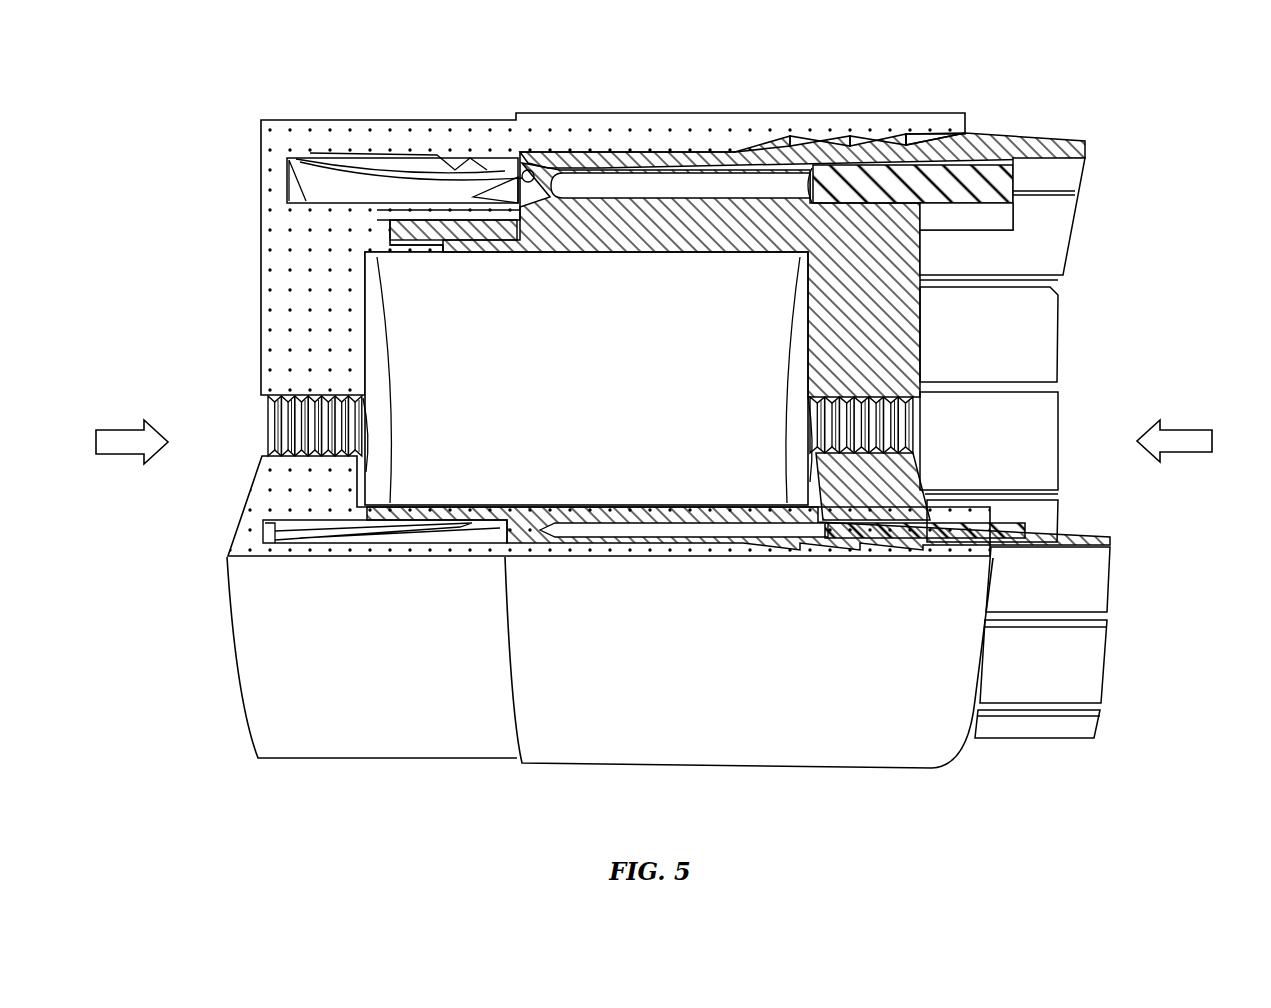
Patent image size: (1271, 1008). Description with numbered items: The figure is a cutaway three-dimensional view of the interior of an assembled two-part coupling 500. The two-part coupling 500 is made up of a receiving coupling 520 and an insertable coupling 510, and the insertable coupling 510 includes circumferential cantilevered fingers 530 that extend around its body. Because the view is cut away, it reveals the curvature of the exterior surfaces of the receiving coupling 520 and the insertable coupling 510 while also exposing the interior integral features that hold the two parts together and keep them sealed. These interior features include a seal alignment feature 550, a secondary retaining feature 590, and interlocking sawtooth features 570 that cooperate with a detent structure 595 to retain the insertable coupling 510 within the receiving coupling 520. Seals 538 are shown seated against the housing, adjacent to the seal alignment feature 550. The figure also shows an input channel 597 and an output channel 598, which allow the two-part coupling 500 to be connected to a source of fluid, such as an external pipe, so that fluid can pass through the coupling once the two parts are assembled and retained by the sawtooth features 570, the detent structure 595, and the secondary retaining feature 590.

The two-part coupling 500 is at (176, 107).
The insertable coupling 510 is at (1183, 424).
The receiving coupling 520 is at (117, 426).
The circumferential cantilevered fingers 530 is at (1038, 336).
The seal 538 is at (1013, 179).
The seal alignment feature 550 is at (377, 257).
The interlocking sawtooth features 570 is at (834, 138).
The secondary retaining feature 590 is at (532, 112).
The detent structure 595 is at (910, 138).
The input channel 597 is at (292, 428).
The output channel 598 is at (826, 430).